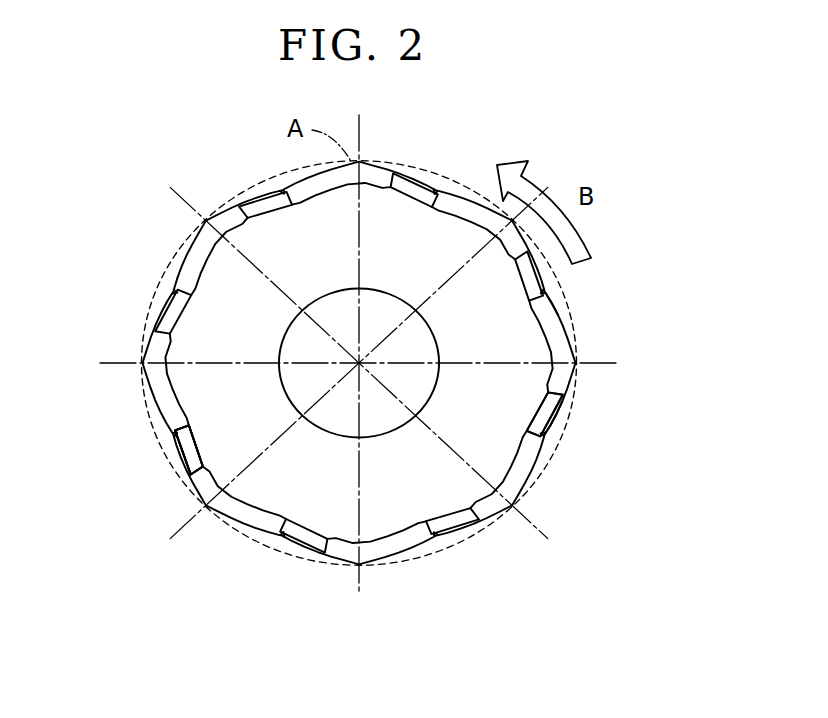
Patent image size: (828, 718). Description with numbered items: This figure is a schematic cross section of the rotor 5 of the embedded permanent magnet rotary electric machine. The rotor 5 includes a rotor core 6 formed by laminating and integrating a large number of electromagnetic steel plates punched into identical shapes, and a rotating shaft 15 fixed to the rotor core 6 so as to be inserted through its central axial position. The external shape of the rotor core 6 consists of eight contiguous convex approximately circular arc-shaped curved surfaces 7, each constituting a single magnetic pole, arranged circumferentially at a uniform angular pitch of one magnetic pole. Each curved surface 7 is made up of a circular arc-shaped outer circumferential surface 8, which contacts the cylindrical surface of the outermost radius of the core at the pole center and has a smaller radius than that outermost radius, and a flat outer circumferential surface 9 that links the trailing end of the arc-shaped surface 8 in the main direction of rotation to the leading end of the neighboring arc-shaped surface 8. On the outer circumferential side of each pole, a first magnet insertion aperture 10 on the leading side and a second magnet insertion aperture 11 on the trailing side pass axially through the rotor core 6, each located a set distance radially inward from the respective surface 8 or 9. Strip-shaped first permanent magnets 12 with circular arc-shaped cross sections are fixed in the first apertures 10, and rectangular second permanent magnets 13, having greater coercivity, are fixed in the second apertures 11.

The rotor 5 is at (134, 108).
The rotor core 6 is at (170, 258).
The approximately circular arc-shaped curved surface 7 is at (101, 457).
The circular arc-shaped outer circumferential surface 8 is at (197, 502).
The flat outer circumferential surface 9 is at (172, 458).
The first magnet insertion aperture 10 is at (571, 352).
The second magnet insertion aperture 11 is at (547, 410).
The first permanent magnet 12 is at (557, 337).
The second permanent magnet 13 is at (558, 410).
The rotating shaft 15 is at (297, 340).